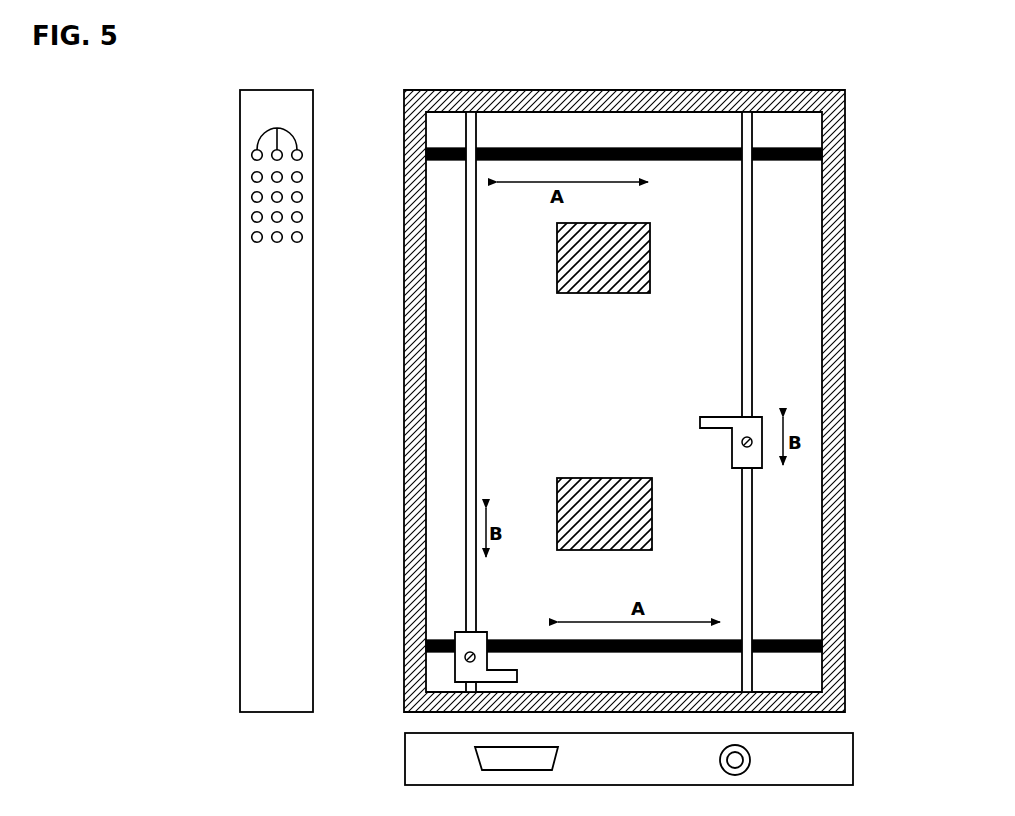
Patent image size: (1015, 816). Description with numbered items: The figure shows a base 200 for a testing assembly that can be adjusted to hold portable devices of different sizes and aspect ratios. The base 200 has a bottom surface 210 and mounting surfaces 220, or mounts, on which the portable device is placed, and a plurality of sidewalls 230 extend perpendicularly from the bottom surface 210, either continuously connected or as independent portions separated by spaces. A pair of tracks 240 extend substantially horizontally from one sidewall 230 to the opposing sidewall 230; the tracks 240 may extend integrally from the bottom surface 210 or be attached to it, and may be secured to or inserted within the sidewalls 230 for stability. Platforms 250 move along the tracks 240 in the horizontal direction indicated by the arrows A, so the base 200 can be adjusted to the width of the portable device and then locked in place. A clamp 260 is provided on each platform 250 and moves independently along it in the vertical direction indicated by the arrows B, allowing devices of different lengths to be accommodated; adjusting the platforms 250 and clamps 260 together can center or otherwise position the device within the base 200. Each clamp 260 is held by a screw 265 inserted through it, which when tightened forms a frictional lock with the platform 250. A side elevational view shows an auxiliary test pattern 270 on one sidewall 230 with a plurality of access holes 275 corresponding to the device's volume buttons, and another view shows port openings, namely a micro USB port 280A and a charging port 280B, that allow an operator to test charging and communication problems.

The base 200 is at (922, 112).
The bottom surface 210 is at (618, 395).
The mounting surface 220 is at (651, 257).
The sidewall 230 is at (278, 88).
The track 240 is at (570, 148).
The platform 250 is at (477, 350).
The clamp 260 is at (488, 632).
The screw 265 is at (465, 658).
The auxiliary test pattern 270 is at (323, 150).
The access hole 275 is at (277, 124).
The micro universal serial bus (USB) port 280A is at (558, 758).
The charging port 280B is at (750, 760).